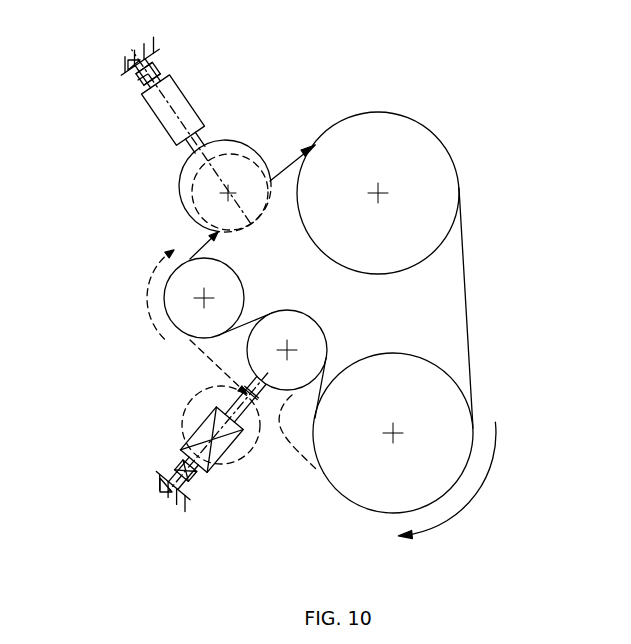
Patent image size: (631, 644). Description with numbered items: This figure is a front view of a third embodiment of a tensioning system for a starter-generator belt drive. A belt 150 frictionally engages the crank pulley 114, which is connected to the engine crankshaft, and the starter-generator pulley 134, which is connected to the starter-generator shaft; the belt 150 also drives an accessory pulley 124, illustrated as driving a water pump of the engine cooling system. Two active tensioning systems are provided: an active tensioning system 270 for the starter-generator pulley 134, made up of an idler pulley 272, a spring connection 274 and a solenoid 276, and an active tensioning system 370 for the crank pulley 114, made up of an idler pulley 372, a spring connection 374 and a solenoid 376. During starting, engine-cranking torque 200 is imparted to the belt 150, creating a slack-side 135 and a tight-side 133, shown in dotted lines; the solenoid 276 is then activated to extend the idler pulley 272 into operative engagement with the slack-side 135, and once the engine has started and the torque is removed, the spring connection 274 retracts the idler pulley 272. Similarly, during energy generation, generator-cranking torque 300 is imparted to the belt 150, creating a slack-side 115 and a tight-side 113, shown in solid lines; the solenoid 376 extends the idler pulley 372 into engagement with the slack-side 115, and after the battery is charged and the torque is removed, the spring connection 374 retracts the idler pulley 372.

The tight-side 113 is at (473, 365).
The crank pulley 114 is at (372, 493).
The slack-side 115 is at (335, 373).
The pulley 124 is at (427, 164).
The tight-side 133 is at (200, 348).
The starter-generator pulley 134 is at (246, 294).
The slack-side 135 is at (205, 226).
The belt 150 is at (467, 280).
The engine-cranking torque 200 is at (147, 297).
The active tensioning system 270 is at (112, 60).
The idler pulley 272 is at (233, 139).
The spring connection 274 is at (163, 75).
The solenoid 276 is at (157, 119).
The generator-cranking torque 300 is at (480, 495).
The active tensioning system 370 is at (145, 481).
The idler pulley 372 is at (258, 408).
The spring connection 374 is at (183, 428).
The solenoid 376 is at (192, 487).